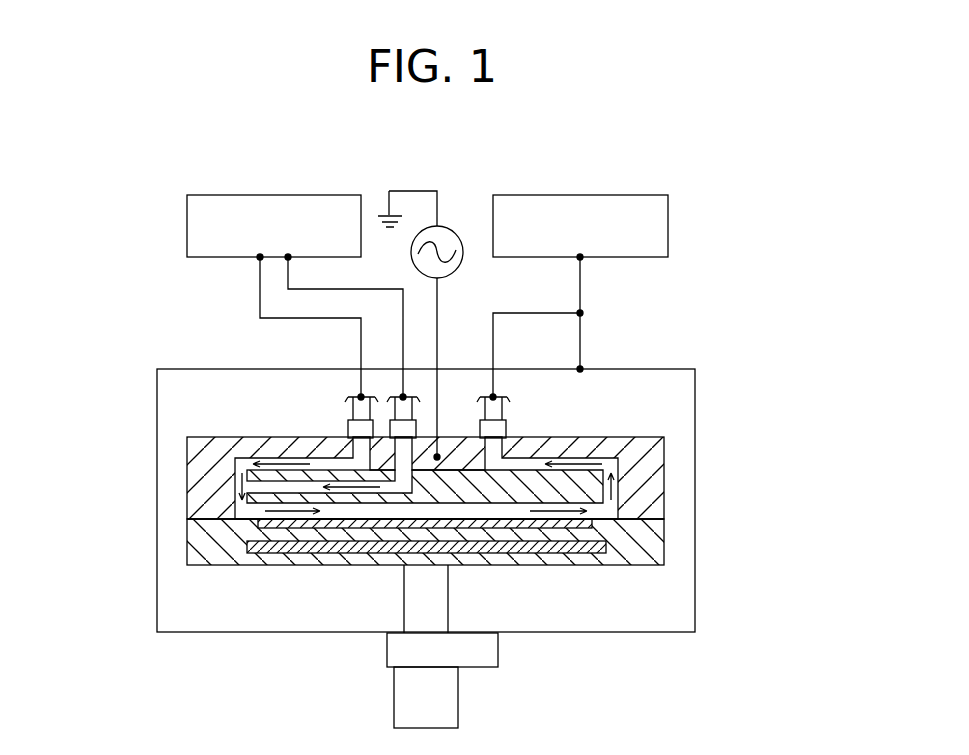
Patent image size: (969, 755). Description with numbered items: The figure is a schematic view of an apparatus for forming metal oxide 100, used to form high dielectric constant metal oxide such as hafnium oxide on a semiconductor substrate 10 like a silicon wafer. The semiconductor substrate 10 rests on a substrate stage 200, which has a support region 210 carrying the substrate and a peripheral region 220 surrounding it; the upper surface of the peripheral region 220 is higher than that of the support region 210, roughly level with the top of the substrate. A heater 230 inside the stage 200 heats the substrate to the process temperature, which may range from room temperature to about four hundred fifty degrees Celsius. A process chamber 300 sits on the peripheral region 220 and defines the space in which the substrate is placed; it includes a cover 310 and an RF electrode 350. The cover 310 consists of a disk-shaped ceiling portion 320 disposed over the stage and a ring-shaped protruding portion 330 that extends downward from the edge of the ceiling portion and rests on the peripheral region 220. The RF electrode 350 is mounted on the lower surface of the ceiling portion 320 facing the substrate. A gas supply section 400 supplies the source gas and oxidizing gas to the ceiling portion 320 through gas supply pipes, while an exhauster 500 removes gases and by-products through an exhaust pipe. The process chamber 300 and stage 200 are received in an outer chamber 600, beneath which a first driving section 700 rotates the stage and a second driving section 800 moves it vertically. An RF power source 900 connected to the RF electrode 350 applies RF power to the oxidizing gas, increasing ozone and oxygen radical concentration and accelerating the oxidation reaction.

The apparatus for forming metal oxide 100 is at (453, 129).
The semiconductor substrate 10 is at (523, 528).
The substrate stage 200 is at (480, 610).
The support region 210 is at (585, 553).
The peripheral region 220 is at (632, 520).
The heater 230 is at (282, 553).
The process chamber 300 is at (493, 419).
The cover 310 is at (674, 461).
The ceiling portion 320 is at (591, 447).
The protruding portion 330 is at (657, 488).
The RF electrode 350 is at (525, 475).
The gas supply section 400 is at (187, 223).
The exhauster 500 is at (668, 225).
The outer chamber 600 is at (157, 500).
The first driving section 700 is at (387, 654).
The second driving section 800 is at (448, 710).
The RF power source 900 is at (443, 233).